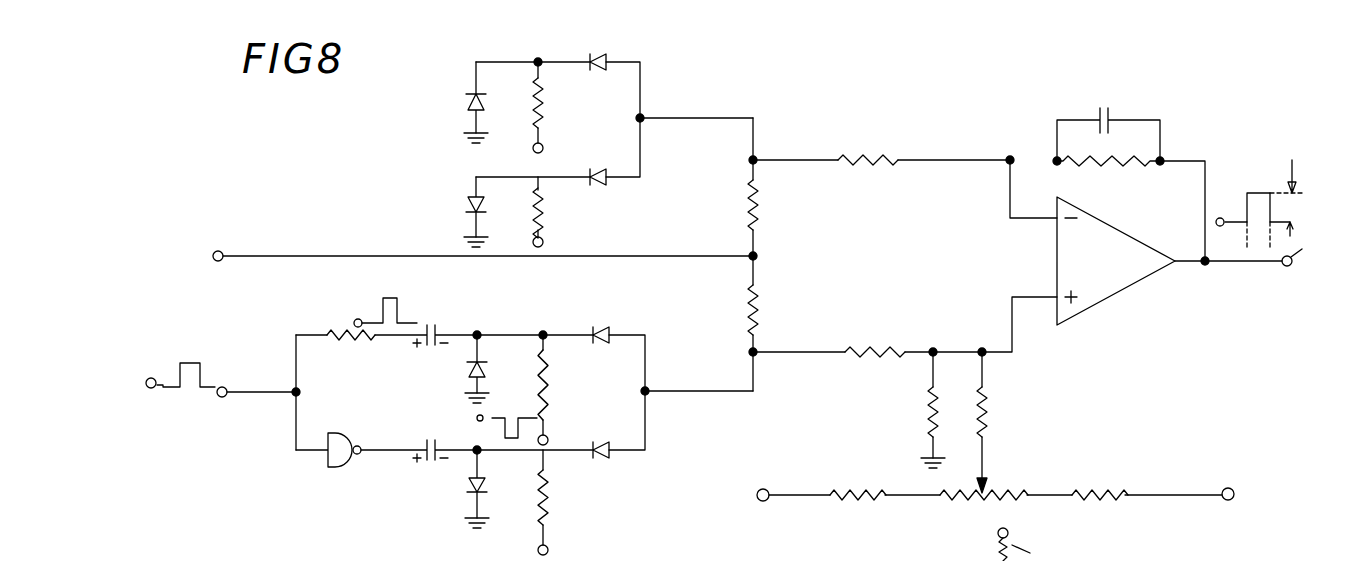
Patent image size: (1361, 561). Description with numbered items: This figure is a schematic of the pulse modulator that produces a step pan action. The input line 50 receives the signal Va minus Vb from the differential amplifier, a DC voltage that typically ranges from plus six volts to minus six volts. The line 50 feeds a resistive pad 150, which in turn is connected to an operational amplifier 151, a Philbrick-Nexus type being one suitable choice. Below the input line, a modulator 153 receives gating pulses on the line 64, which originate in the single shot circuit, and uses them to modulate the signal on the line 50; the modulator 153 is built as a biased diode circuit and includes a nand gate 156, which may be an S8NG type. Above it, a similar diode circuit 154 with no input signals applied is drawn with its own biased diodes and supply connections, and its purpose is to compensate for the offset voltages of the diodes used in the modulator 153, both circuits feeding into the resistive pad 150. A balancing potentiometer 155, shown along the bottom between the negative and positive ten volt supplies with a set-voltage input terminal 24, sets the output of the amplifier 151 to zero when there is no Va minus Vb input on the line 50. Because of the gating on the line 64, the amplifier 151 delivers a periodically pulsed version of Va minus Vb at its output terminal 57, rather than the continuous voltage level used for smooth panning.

The set voltage input terminal 24 is at (997, 535).
The input line 50 is at (293, 254).
The output terminal 57 is at (1306, 245).
The line 64 is at (263, 394).
The resistive pad 150 is at (902, 305).
The operational amplifier 151 is at (1118, 296).
The modulator 153 is at (522, 429).
The diode circuit 154 is at (608, 152).
The balancing potentiometer 155 is at (1003, 490).
The nand gate 156 is at (347, 455).